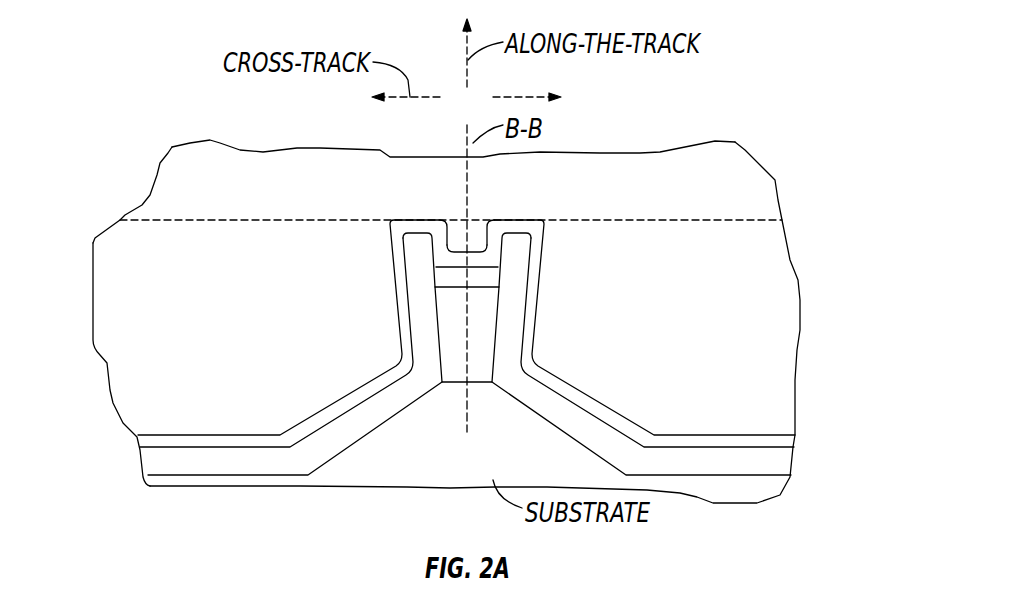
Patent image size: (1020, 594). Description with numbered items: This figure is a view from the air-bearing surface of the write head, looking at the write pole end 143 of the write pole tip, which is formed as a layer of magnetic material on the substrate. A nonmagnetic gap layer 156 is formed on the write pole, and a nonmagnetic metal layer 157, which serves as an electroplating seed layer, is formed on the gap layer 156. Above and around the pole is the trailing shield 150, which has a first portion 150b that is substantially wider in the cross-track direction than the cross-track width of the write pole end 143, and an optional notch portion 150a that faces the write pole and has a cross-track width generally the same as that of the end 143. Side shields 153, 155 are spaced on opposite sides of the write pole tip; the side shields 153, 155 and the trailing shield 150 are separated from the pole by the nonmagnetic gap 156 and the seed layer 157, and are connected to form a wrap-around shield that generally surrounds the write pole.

The end 143 is at (477, 348).
The trailing shield 150 is at (607, 153).
The notch portion 150a is at (478, 242).
The first portion 150b is at (458, 258).
The side shield 153 is at (780, 340).
The side shield 155 is at (126, 402).
The nonmagnetic gap layer 156 is at (453, 278).
The nonmagnetic metal layer 157 is at (455, 250).